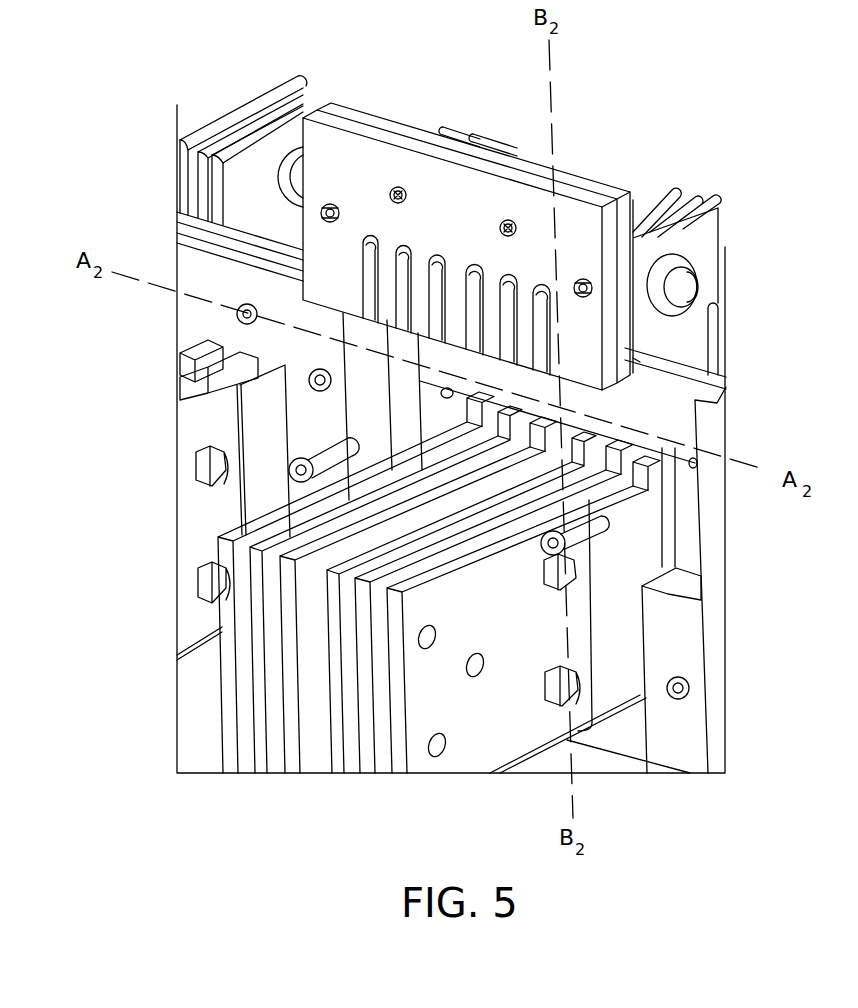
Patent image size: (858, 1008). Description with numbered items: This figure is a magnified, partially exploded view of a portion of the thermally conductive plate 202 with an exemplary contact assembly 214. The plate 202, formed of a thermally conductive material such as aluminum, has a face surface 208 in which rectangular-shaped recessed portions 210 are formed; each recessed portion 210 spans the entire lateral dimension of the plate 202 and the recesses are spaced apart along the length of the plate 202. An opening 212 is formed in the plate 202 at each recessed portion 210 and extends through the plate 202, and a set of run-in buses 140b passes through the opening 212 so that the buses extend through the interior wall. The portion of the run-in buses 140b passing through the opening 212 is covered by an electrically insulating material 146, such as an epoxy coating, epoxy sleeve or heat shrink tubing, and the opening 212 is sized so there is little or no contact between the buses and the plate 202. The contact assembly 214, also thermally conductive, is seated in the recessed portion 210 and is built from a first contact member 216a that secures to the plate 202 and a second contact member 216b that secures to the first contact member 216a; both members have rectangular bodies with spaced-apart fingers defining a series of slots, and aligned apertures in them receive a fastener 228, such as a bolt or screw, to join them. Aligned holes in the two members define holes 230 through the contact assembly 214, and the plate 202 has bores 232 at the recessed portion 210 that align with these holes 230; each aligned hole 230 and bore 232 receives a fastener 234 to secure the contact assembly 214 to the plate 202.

The run-in buses 140b is at (243, 714).
The electrically insulating material 146 is at (636, 695).
The thermally conductive plate 202 is at (728, 388).
The face surface 208 is at (667, 380).
The recessed portion 210 is at (683, 393).
The opening 212 is at (668, 535).
The contact assembly 214 is at (590, 176).
The first contact member 216a is at (402, 190).
The second contact member 216b is at (368, 132).
The fastener 228 is at (506, 222).
The holes 230 is at (563, 289).
The bores 232 is at (686, 465).
The fastener 234 is at (525, 553).